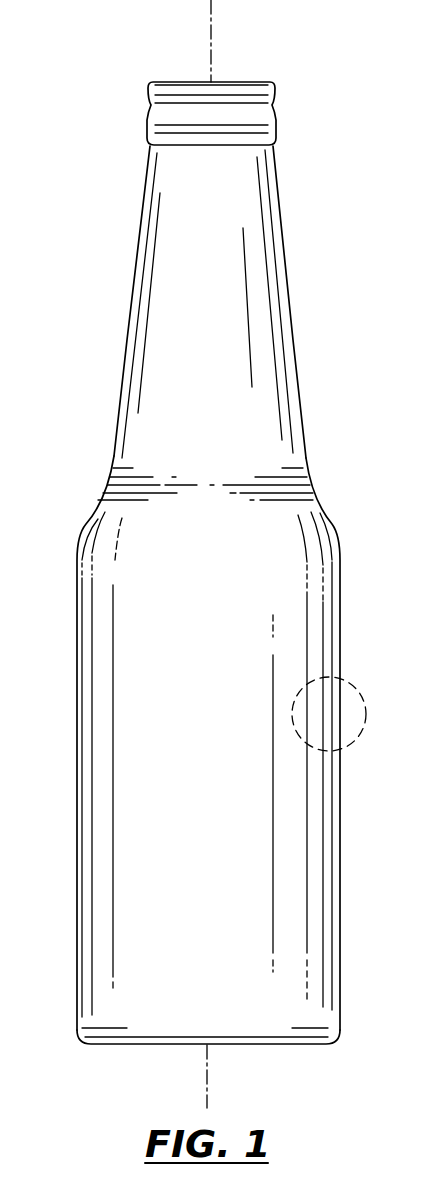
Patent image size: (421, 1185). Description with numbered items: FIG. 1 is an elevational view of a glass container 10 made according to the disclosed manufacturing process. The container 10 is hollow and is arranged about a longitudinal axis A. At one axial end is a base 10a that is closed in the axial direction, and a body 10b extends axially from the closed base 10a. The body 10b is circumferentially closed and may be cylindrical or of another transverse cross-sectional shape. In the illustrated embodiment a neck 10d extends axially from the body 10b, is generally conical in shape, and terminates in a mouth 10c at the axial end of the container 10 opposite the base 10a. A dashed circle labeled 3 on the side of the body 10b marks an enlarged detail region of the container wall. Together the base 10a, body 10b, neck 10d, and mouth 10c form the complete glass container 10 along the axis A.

The glass container 10 is at (93, 233).
The base 10a is at (297, 1045).
The body 10b is at (338, 940).
The mouth 10c is at (260, 80).
The neck 10d is at (292, 330).
The detail region shown in FIG. 3 is at (350, 686).
The longitudinal axis A is at (212, 22).